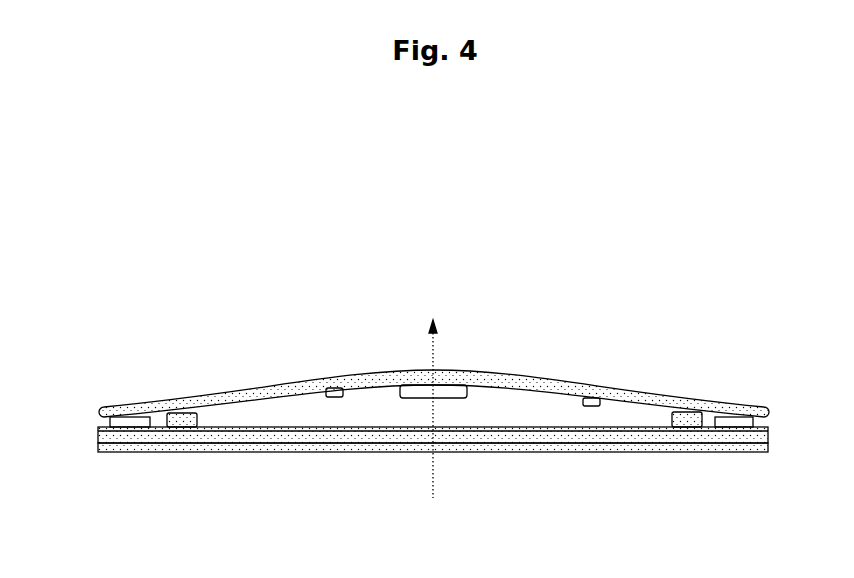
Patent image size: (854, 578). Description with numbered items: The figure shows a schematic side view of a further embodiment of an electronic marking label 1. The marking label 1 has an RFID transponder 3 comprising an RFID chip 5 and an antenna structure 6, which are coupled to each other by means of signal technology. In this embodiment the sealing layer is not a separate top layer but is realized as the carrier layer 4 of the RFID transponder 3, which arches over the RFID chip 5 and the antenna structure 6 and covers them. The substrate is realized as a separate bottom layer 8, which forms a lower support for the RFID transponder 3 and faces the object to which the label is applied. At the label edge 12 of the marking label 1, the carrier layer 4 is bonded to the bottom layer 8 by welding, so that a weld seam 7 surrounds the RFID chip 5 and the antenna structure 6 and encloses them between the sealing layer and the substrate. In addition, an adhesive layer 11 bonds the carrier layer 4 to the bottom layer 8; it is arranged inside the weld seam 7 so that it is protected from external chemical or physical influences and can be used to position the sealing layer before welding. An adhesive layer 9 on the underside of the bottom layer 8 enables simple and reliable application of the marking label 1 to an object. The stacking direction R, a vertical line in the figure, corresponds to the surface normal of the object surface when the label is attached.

The electronic marking label 1 is at (90, 258).
The RFID transponder 3 is at (557, 343).
The carrier layer 4 is at (242, 393).
The RFID chip 5 is at (413, 392).
The antenna structure 6 is at (332, 388).
The weld seam 7 is at (122, 423).
The bottom layer 8 is at (282, 437).
The adhesive layer 9 is at (528, 447).
The adhesive layer 11 is at (181, 421).
The label edge 12 is at (113, 461).
The stacking direction R is at (437, 350).